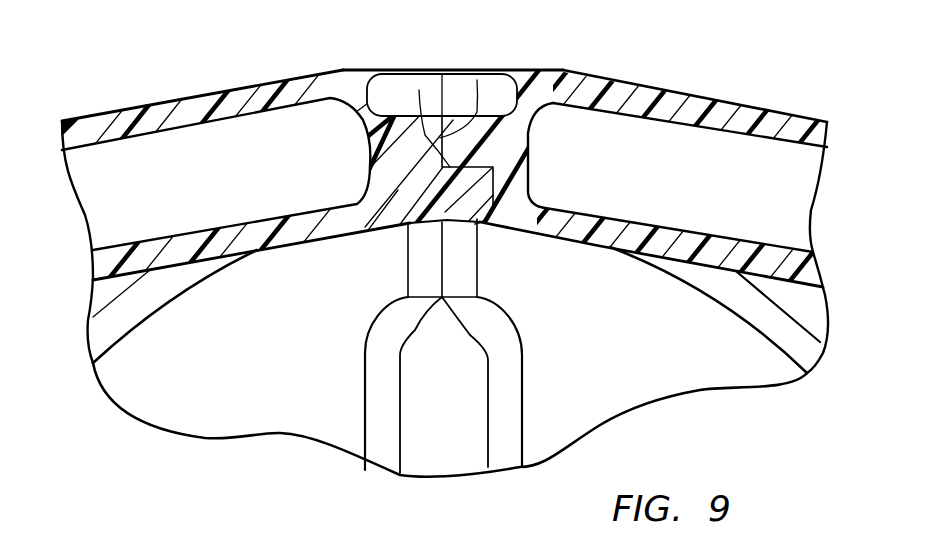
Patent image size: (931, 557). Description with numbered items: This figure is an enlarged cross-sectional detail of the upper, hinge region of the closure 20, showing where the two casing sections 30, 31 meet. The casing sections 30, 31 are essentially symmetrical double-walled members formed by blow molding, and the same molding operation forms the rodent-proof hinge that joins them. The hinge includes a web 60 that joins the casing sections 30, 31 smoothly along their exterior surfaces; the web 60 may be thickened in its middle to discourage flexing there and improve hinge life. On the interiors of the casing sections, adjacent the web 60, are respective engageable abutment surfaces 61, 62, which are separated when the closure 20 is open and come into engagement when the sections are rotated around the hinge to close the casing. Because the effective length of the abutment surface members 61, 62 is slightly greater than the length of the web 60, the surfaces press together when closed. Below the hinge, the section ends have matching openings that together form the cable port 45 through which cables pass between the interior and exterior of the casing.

The closure 20 is at (193, 56).
The casing section 30 is at (760, 100).
The casing section 31 is at (124, 106).
The cable port 45 is at (453, 453).
The web 60 is at (465, 67).
The abutment surface 61 is at (477, 80).
The abutment surface 62 is at (419, 90).